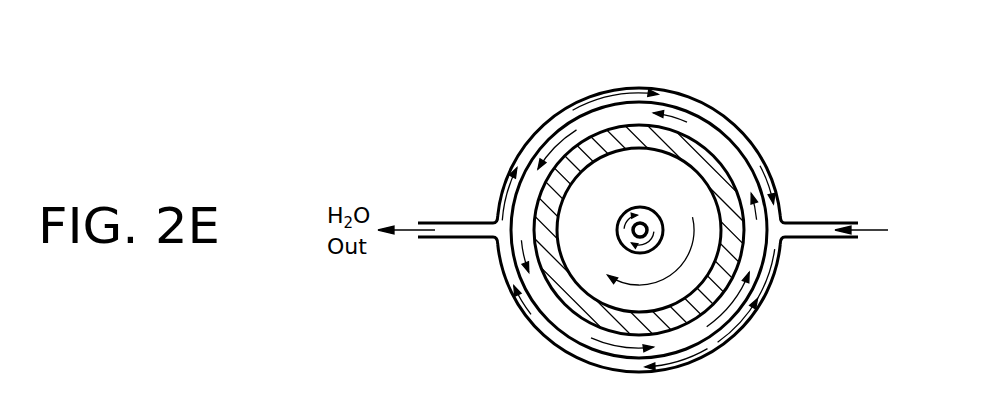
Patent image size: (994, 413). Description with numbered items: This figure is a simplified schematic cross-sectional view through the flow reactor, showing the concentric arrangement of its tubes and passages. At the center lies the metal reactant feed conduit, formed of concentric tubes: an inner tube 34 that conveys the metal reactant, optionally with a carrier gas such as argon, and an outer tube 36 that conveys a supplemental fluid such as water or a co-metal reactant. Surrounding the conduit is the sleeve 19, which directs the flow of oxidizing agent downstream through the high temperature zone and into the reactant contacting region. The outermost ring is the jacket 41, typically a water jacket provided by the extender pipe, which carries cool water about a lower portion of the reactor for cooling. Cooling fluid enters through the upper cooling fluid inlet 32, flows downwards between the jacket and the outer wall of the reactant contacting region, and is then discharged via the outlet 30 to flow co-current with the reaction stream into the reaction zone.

The sleeve 19 is at (686, 197).
The outlet 30 is at (743, 173).
The upper cooling fluid inlet 32 is at (827, 239).
The inner tube 34 is at (638, 207).
The outer tube 36 is at (650, 213).
The jacket 41 is at (735, 332).